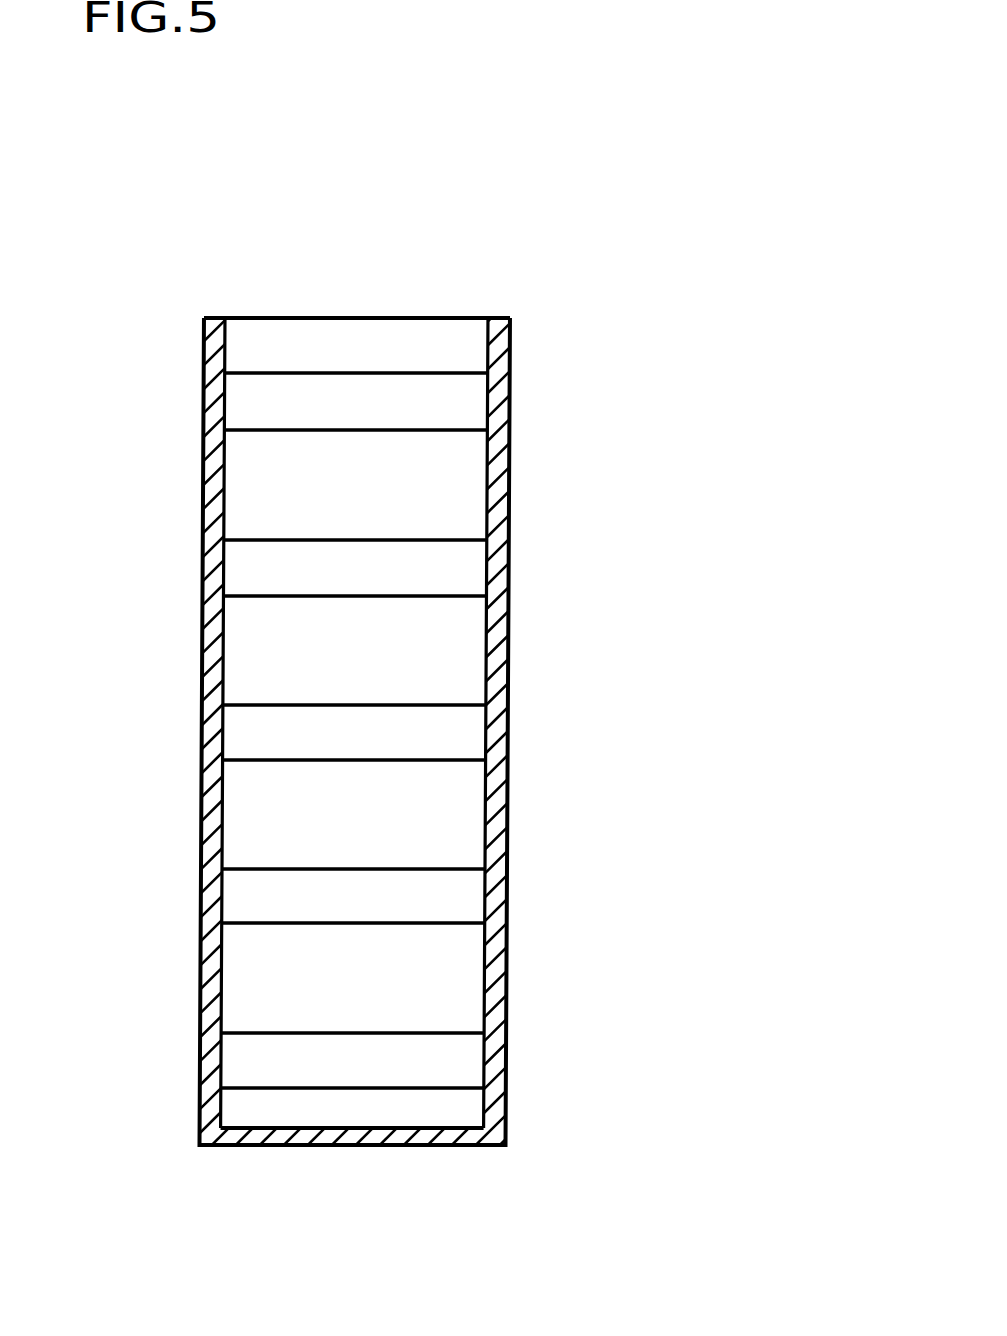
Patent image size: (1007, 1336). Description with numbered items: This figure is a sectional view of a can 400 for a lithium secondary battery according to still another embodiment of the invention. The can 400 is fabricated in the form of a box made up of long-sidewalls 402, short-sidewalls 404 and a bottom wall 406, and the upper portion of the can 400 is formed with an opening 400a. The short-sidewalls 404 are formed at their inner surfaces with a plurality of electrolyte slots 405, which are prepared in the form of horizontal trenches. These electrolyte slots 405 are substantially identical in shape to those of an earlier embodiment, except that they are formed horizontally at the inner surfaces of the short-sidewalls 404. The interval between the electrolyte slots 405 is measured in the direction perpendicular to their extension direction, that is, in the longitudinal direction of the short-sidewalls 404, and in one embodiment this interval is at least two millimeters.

The can 400 is at (582, 238).
The opening 400a is at (245, 317).
The long-sidewalls 402 is at (510, 502).
The short-sidewalls 404 is at (318, 328).
The electrolyte slots 405 is at (432, 383).
The bottom wall 406 is at (342, 1145).